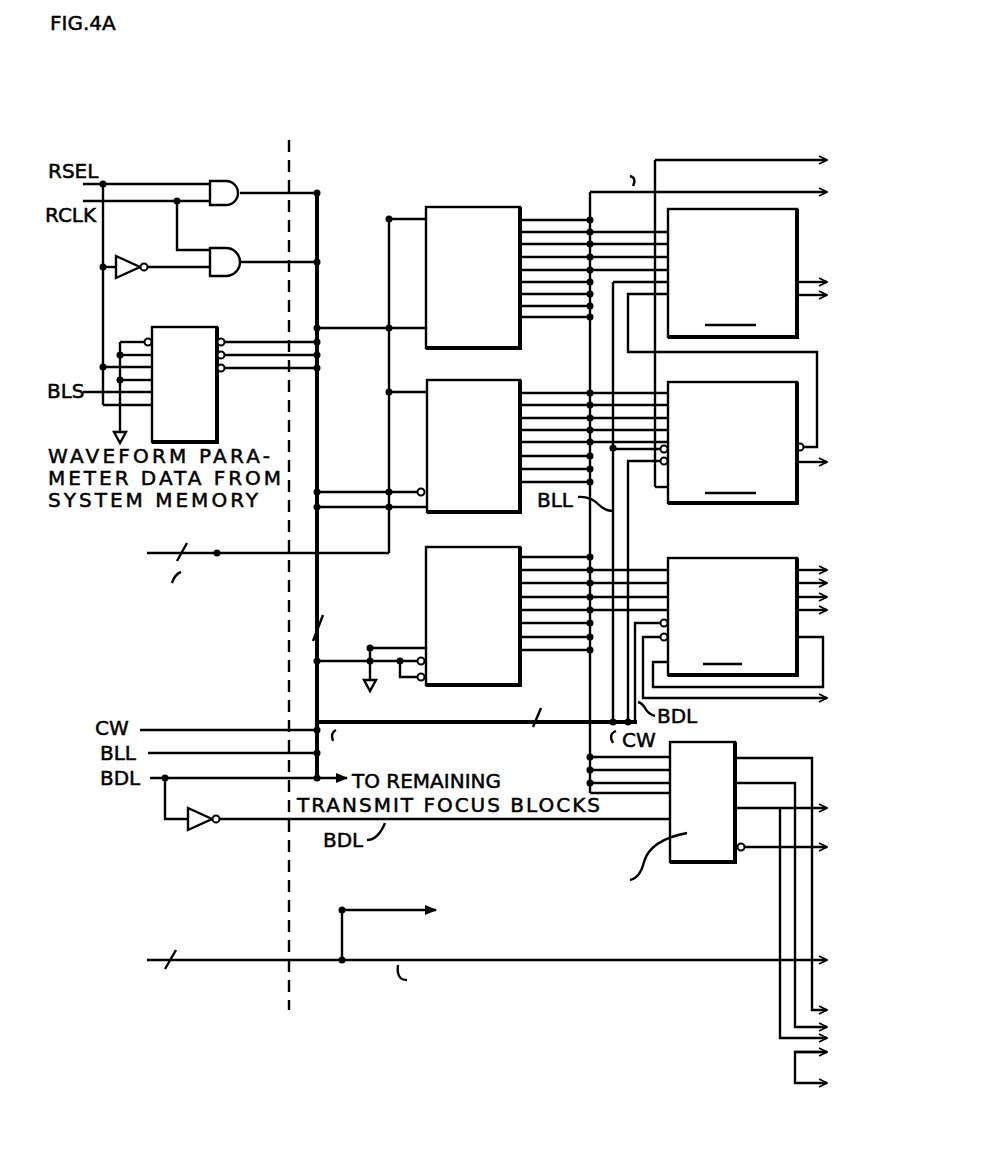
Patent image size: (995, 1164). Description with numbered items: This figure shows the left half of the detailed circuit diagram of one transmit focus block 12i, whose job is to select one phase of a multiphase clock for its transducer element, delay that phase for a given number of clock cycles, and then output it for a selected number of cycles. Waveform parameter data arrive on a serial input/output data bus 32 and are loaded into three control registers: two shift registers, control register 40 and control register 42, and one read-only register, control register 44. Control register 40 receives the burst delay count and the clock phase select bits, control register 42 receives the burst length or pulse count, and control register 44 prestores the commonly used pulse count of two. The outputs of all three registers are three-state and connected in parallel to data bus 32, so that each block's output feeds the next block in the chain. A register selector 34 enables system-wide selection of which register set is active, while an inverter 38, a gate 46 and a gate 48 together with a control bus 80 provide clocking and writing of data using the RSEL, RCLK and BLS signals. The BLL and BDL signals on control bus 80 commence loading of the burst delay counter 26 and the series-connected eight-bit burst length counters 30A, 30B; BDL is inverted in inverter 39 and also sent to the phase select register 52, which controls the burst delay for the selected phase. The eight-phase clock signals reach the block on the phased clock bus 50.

The transmit focus block 12i is at (630, 118).
The burst delay counter 26 is at (708, 640).
The burst length counter 30A is at (708, 330).
The burst length counter 30B is at (708, 552).
The serial input/output data bus 32 is at (283, 556).
The register selector 34 is at (204, 421).
The inverter 38 is at (124, 256).
The inverter 39 is at (196, 809).
The control register 40 is at (453, 219).
The control register 42 is at (438, 438).
The control register 44 is at (443, 622).
The gate 46 is at (237, 188).
The gate 48 is at (237, 253).
The phased clock bus 50 is at (278, 965).
The phase select register 52 is at (717, 760).
The control bus 80 is at (318, 593).